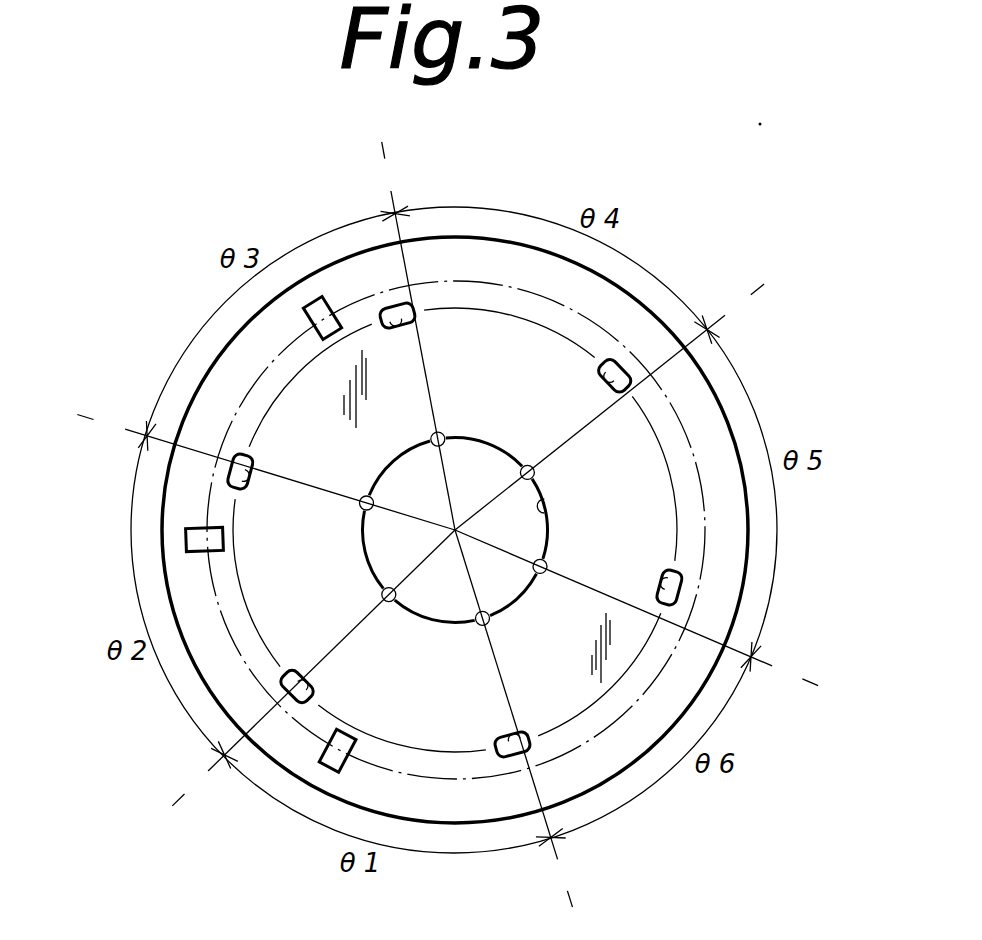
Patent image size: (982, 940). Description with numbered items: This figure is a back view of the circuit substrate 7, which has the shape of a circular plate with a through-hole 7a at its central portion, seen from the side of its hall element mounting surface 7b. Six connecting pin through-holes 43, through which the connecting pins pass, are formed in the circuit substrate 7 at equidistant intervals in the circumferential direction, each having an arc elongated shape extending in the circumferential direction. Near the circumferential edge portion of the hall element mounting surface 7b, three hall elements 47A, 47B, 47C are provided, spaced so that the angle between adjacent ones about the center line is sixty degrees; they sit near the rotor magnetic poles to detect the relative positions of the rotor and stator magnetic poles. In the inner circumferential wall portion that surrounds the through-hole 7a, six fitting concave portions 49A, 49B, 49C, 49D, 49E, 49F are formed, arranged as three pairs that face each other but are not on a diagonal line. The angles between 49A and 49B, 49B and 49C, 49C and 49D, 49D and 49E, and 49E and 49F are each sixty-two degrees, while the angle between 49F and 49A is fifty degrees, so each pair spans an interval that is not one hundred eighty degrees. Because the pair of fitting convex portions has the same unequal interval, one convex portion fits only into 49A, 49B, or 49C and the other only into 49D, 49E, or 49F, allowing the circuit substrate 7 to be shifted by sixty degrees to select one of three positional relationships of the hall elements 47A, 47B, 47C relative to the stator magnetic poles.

The circuit substrate 7 is at (198, 375).
The through-hole 7a is at (550, 513).
The hall element mounting surface 7b is at (277, 430).
The connecting pin through-holes 43 is at (385, 307).
The hall element 47A is at (332, 767).
The hall element 47B is at (188, 541).
The hall element 47C is at (312, 300).
The fitting concave portion 49A is at (489, 623).
The fitting concave portion 49B is at (384, 596).
The fitting concave portion 49C is at (362, 497).
The fitting concave portion 49D is at (442, 434).
The fitting concave portion 49E is at (534, 470).
The fitting concave portion 49F is at (547, 567).